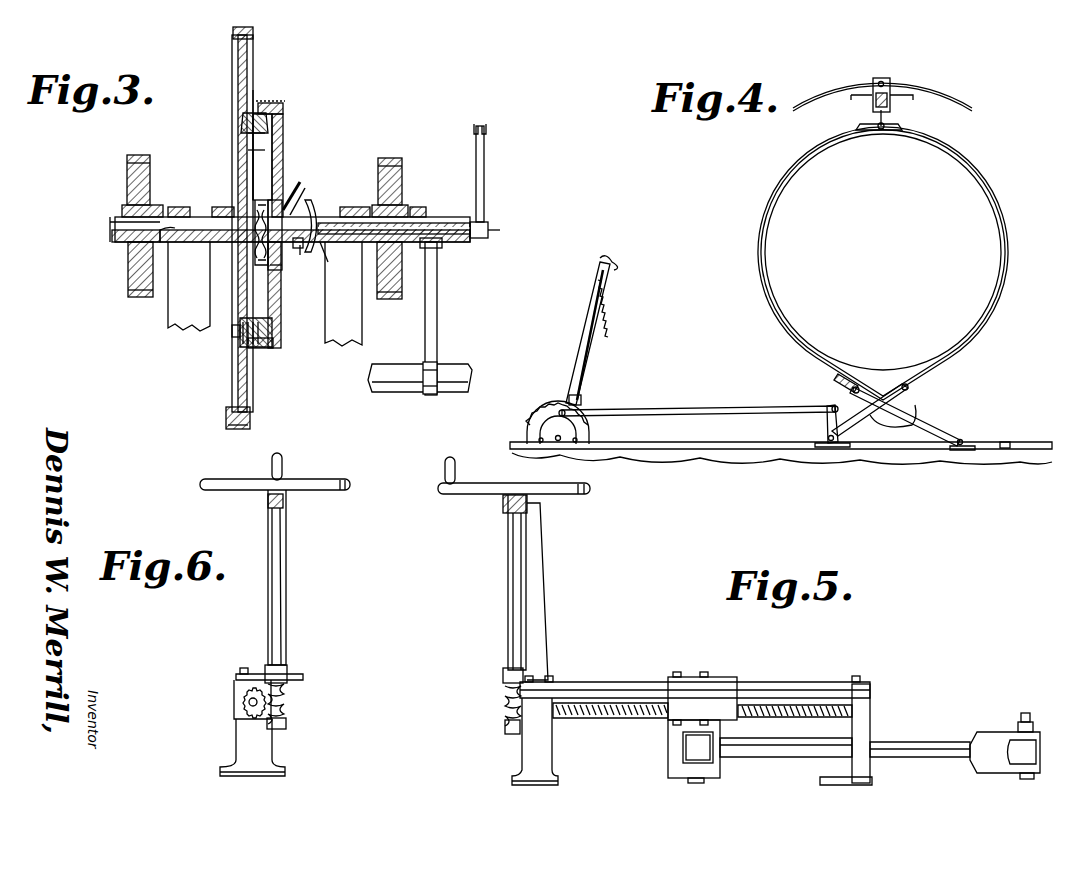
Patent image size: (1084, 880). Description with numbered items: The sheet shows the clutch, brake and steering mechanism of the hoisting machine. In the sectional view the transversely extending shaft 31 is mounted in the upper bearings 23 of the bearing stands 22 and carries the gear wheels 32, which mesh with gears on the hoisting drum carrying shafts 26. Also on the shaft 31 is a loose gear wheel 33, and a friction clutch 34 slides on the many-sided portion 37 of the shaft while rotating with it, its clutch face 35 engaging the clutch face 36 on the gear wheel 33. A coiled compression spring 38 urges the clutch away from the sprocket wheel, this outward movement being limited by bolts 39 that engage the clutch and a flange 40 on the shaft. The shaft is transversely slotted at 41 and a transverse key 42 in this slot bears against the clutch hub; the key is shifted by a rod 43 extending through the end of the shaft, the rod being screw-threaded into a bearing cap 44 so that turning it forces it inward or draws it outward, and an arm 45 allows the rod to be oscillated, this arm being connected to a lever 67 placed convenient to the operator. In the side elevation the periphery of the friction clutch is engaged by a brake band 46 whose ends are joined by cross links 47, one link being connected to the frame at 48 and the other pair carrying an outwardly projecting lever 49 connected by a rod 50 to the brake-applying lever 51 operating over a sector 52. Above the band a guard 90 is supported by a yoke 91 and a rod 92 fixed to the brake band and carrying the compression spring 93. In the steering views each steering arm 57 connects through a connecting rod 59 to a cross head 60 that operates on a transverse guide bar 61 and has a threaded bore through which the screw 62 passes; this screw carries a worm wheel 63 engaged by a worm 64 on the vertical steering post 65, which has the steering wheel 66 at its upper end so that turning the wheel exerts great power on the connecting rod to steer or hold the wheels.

In FIG. 3, the bearing stand 22 is at (168, 312).
In FIG. 3, the upper bearing 23 is at (190, 207).
In FIG. 3, the hoisting drum carrying shaft 26 is at (372, 383).
In FIG. 3, the shaft 31 is at (120, 222).
In FIG. 3, the gear wheel 32 is at (150, 178).
In FIG. 3, the loose gear wheel 33 is at (240, 96).
In FIG. 3, the friction clutch 34 is at (281, 300).
In FIG. 4, the friction clutch 34 is at (764, 246).
In FIG. 3, the clutch face 35 is at (268, 346).
In FIG. 3, the clutch face 36 is at (245, 340).
In FIG. 3, the many-sided portion 37 is at (292, 208).
In FIG. 3, the coiled compression spring 38 is at (256, 252).
In FIG. 3, the bolt 39 is at (270, 268).
In FIG. 3, the flange 40 is at (316, 208).
In FIG. 3, the transverse slot 41 is at (333, 255).
In FIG. 3, the transverse key 42 is at (300, 250).
In FIG. 3, the rod 43 is at (400, 210).
In FIG. 3, the bearing cap 44 is at (440, 250).
In FIG. 3, the arm 45 is at (482, 208).
In FIG. 3, the brake band 46 is at (276, 104).
In FIG. 4, the brake band 46 is at (912, 138).
In FIG. 4, the cross link 47 is at (900, 406).
In FIG. 4, the frame connection 48 is at (960, 440).
In FIG. 4, the lever 49 is at (806, 412).
In FIG. 4, the rod 50 is at (712, 410).
In FIG. 4, the brake-applying lever 51 is at (582, 331).
In FIG. 4, the sector 52 is at (541, 405).
In FIG. 5, the steering arm 57 is at (1040, 750).
In FIG. 5, the connecting rod 59 is at (918, 742).
In FIG. 5, the cross head 60 is at (715, 685).
In FIG. 6, the guide bar 61 is at (238, 675).
In FIG. 5, the screw 62 is at (603, 715).
In FIG. 6, the screw 62 is at (249, 704).
In FIG. 5, the worm wheel 63 is at (535, 741).
In FIG. 6, the worm wheel 63 is at (240, 708).
In FIG. 5, the worm 64 is at (505, 710).
In FIG. 6, the worm 64 is at (285, 706).
In FIG. 5, the steering post 65 is at (512, 625).
In FIG. 6, the steering post 65 is at (270, 627).
In FIG. 5, the steering wheel 66 is at (467, 493).
In FIG. 6, the steering wheel 66 is at (330, 472).
In FIG. 5, the lever 67 is at (790, 688).
In FIG. 4, the guard 90 is at (952, 104).
In FIG. 4, the yoke 91 is at (892, 92).
In FIG. 4, the rod 92 is at (878, 118).
In FIG. 4, the compression spring 93 is at (875, 100).